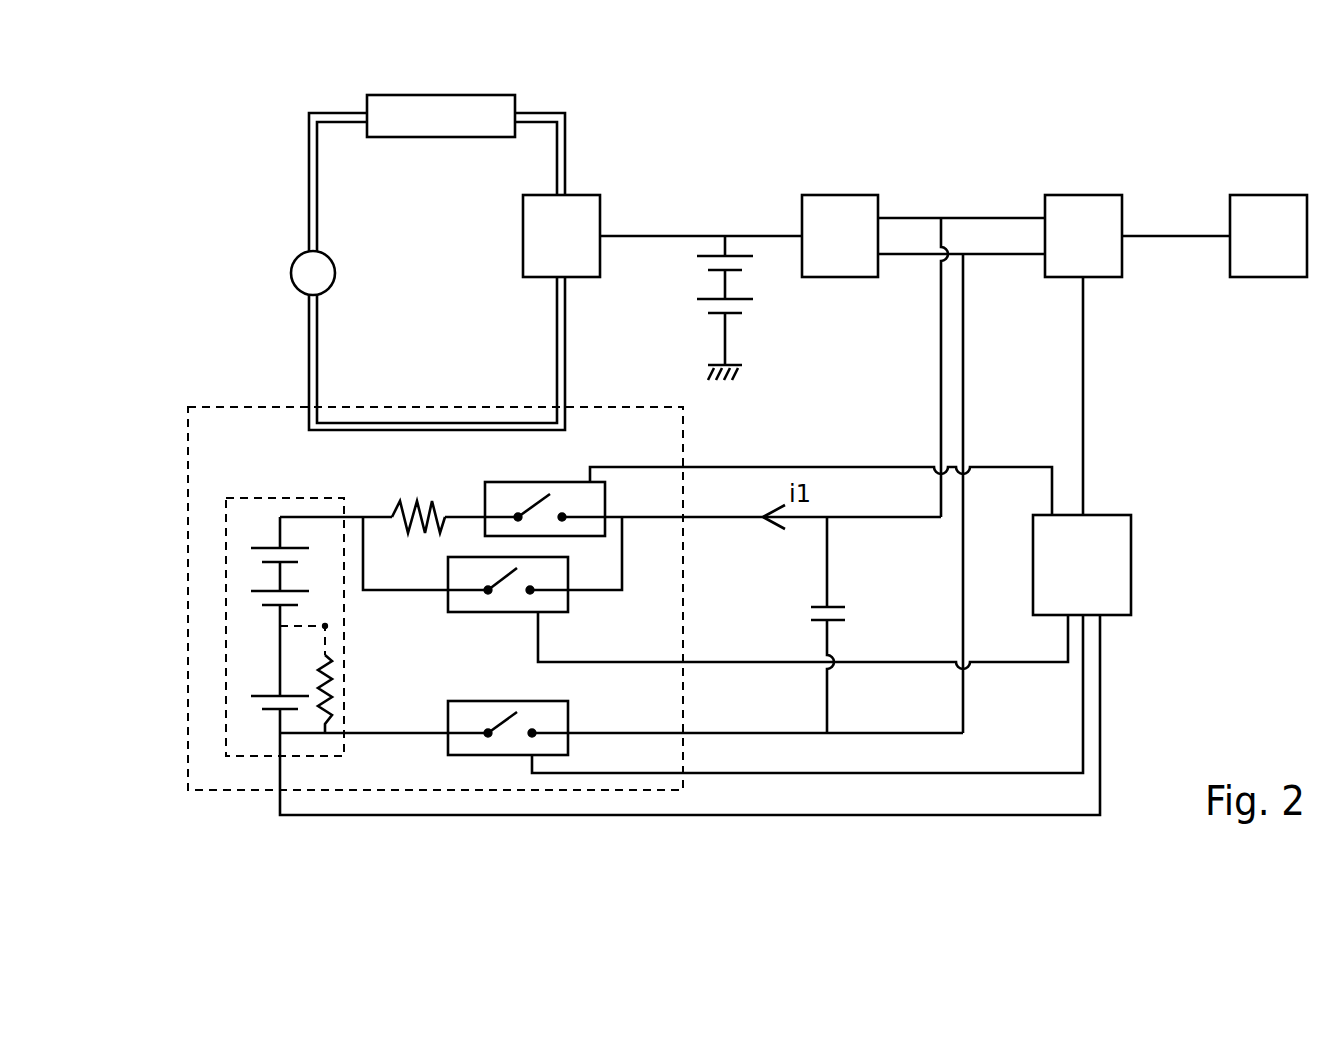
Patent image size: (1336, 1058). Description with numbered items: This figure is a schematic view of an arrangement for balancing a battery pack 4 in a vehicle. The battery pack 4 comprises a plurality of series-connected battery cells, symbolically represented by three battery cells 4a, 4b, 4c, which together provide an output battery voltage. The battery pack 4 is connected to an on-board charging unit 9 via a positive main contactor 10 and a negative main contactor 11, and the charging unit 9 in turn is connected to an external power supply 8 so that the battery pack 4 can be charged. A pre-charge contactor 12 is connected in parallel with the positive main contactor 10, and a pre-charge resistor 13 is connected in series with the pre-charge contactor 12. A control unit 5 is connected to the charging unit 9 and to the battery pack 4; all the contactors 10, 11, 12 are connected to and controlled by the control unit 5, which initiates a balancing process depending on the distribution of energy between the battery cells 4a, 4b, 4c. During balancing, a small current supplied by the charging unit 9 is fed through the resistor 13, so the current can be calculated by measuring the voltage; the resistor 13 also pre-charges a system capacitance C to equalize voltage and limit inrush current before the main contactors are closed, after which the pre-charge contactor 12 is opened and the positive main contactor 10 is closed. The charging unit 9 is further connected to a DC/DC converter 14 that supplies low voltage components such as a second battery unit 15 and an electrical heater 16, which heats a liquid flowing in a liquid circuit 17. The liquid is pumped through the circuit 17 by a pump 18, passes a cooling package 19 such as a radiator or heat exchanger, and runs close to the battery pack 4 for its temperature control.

The battery pack 4 is at (218, 569).
The battery cell 4a is at (262, 548).
The battery cell 4b is at (258, 591).
The battery cell 4c is at (262, 697).
The control unit 5 is at (1115, 567).
The external power supply 8 is at (1245, 258).
The on-board charging unit 9 is at (1095, 277).
The positive main contactor 10 is at (560, 602).
The negative main contactor 11 is at (468, 745).
The pre-charge contactor 12 is at (568, 482).
The pre-charge resistor 13 is at (389, 504).
The DC/DC converter 14 is at (857, 218).
The second battery unit 15 is at (747, 302).
The electrical heater 16 is at (590, 220).
The liquid circuit 17 is at (566, 170).
The pump 18 is at (302, 272).
The cooling package 19 is at (408, 125).
The system capacitance C is at (841, 625).